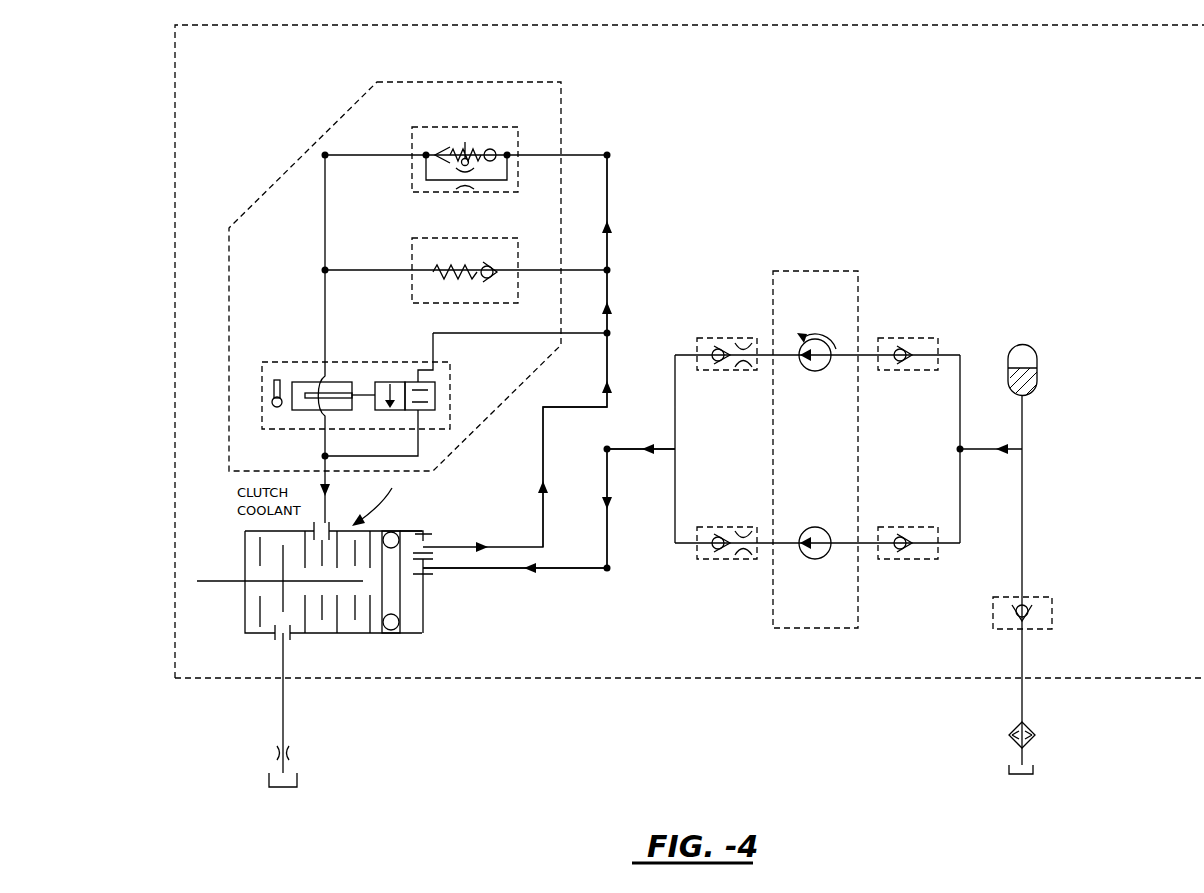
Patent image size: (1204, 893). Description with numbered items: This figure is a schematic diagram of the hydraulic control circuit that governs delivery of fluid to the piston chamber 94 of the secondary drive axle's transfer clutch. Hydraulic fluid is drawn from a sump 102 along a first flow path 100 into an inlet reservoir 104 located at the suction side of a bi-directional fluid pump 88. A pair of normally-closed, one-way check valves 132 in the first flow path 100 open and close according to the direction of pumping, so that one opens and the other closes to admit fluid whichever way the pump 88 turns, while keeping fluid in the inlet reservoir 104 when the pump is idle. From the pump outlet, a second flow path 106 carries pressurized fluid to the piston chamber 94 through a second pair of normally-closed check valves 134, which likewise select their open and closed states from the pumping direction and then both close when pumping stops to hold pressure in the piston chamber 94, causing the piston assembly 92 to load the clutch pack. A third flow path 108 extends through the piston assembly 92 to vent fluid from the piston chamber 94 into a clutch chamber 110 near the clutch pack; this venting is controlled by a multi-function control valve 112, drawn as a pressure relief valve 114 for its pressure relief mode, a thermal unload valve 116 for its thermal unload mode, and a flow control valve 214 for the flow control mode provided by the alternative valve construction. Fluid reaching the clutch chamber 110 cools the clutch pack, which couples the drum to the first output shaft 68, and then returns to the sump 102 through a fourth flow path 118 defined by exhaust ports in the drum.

The flow control valve 214 is at (422, 138).
The multi-function control valve 112 is at (570, 120).
The pressure relief valve 114 is at (423, 258).
The thermal unload valve 116 is at (285, 370).
The third flow path 108 is at (608, 360).
The second flow path 106 is at (573, 569).
The one-way check valves 134 is at (725, 345).
The one-way check valve 132 is at (925, 345).
The fluid pump 88 is at (813, 630).
The inlet reservoir 104 is at (1022, 356).
The first flow path 100 is at (1022, 515).
The sump 102 is at (298, 777).
The clutch chamber 110 is at (280, 543).
The first output shaft 68 is at (212, 583).
The piston assembly 92 is at (392, 598).
The piston chamber 94 is at (408, 542).
The fourth flow path 118 is at (283, 712).